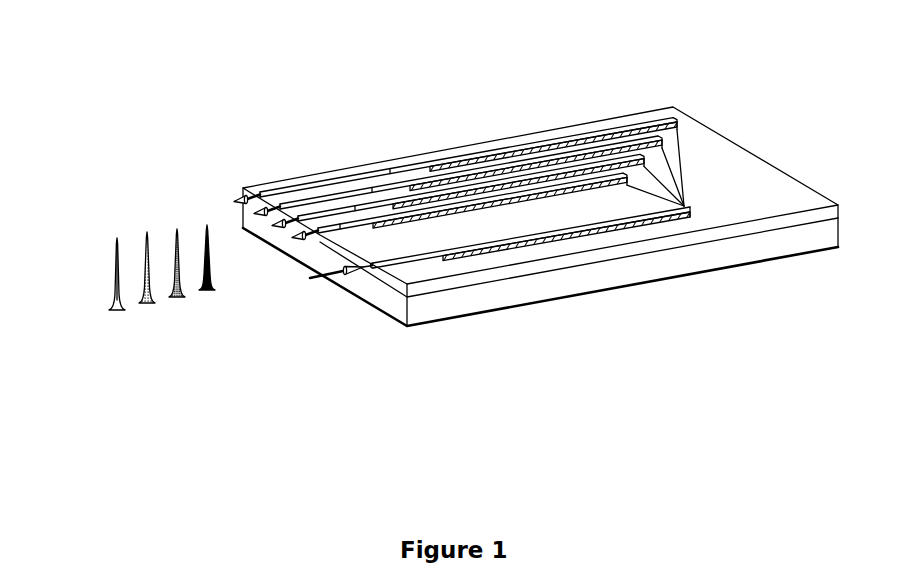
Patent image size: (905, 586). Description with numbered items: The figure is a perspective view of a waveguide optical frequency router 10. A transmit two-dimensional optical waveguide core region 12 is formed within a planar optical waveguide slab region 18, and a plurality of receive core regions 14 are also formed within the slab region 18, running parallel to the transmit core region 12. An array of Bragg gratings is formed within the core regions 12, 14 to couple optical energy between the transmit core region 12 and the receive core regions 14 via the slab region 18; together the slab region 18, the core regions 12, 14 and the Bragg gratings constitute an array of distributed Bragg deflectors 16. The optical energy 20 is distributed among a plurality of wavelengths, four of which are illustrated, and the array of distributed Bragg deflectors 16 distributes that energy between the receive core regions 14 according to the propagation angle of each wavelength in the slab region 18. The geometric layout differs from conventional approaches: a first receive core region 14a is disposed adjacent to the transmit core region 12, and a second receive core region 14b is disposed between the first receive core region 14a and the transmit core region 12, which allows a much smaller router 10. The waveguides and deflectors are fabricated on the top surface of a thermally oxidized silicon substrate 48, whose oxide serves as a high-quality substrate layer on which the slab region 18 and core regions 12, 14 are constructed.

The waveguide optical frequency router 10 is at (528, 53).
The transmit 2-dimensional optical waveguide core region 12 is at (414, 279).
The receive core regions 14 is at (207, 200).
The first receive core region 14a is at (290, 236).
The second receive core region 14b is at (325, 232).
The array of distributed Bragg deflectors 16 is at (578, 109).
The planar optical waveguide slab region 18 is at (752, 157).
The optical energy 20 is at (85, 298).
The silicon substrate 48 is at (637, 287).